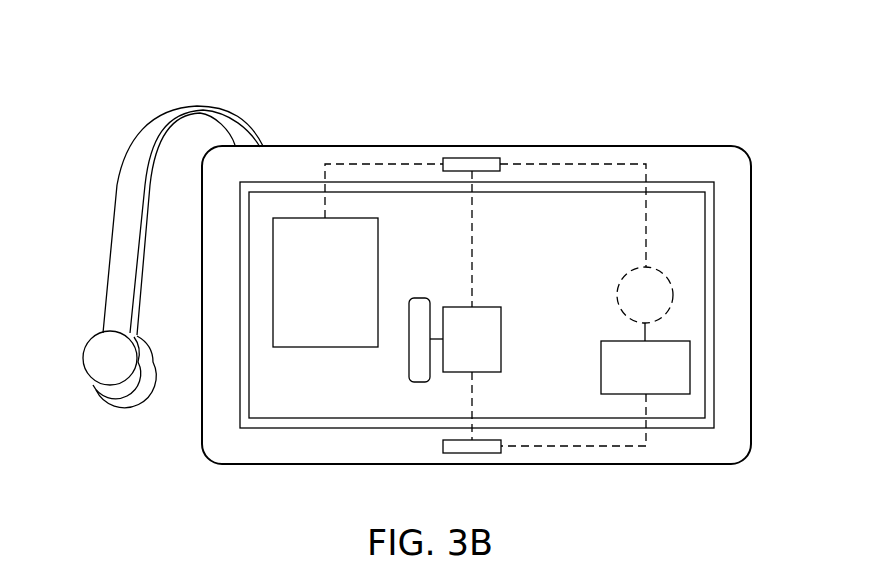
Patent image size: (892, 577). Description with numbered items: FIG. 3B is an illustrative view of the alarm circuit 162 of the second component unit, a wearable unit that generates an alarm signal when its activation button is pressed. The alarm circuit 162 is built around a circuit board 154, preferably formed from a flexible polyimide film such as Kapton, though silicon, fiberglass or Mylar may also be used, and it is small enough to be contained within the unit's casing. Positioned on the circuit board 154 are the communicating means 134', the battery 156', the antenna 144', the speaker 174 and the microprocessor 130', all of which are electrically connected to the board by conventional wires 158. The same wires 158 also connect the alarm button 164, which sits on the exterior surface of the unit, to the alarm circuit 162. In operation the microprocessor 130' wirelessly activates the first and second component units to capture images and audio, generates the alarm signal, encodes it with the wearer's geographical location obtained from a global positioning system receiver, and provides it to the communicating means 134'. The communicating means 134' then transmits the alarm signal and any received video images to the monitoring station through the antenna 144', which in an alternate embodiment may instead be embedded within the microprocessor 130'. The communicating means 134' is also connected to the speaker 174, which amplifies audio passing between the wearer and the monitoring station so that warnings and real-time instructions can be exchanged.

The alarm circuit 162 is at (698, 78).
The circuit board 154 is at (743, 212).
The wires 158 is at (585, 164).
The speaker 174 is at (472, 158).
The battery 156' is at (714, 304).
The communicating means 134' is at (711, 367).
The microprocessor 130' is at (499, 414).
The antenna 144' is at (429, 406).
The alarm button 164 is at (98, 353).